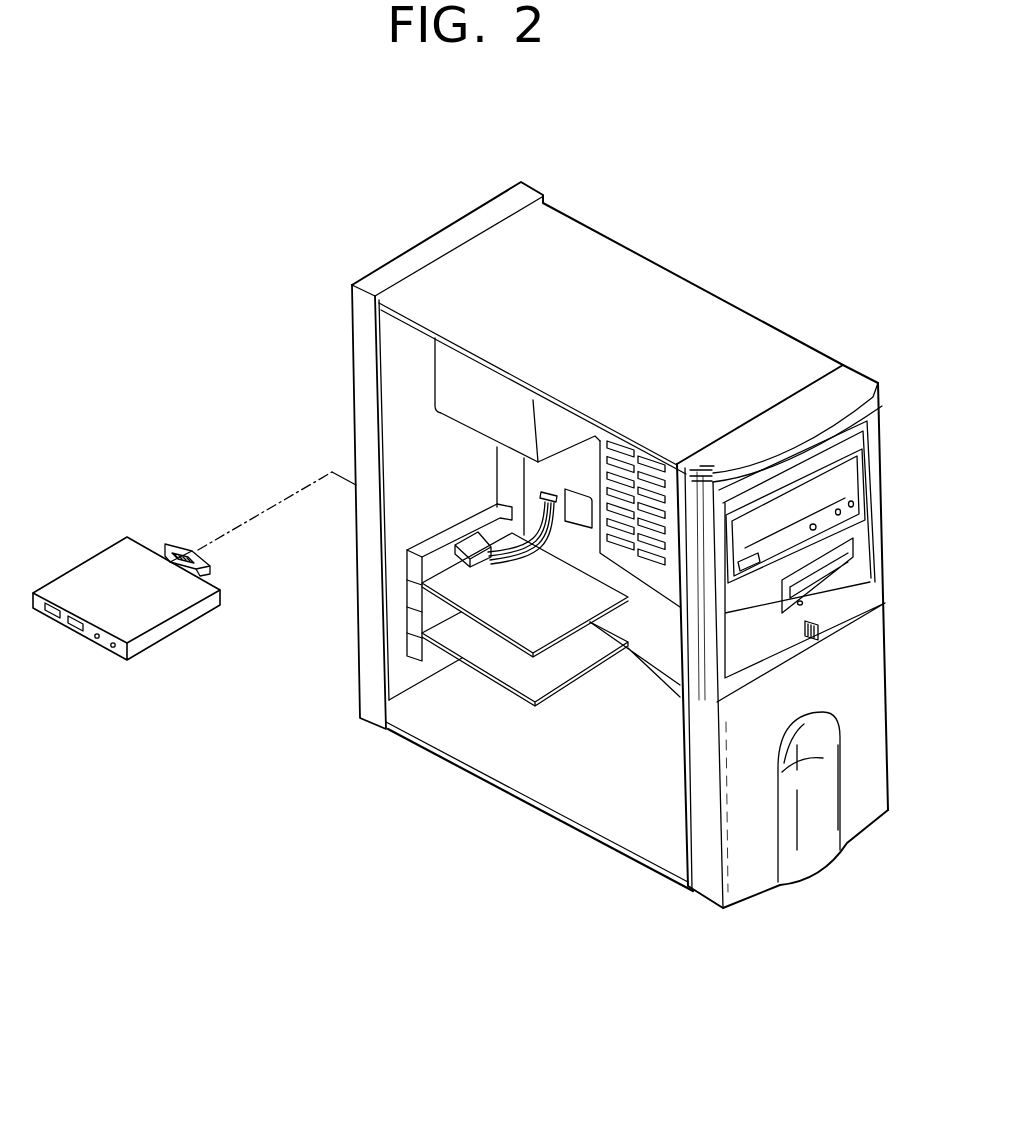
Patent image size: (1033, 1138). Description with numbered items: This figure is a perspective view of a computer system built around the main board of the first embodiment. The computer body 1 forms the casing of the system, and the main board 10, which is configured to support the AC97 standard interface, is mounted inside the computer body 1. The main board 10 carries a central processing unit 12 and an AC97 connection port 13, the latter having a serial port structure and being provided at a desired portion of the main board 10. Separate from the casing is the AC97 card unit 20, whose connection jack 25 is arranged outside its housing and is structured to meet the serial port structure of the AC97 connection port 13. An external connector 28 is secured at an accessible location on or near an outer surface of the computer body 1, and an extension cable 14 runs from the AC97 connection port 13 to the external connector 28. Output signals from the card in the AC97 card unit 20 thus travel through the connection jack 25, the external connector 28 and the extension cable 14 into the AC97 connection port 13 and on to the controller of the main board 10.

The computer body 1 is at (702, 897).
The main board 10 is at (620, 570).
The central processing unit (CPU) 12 is at (586, 500).
The AC97 connection port 13 is at (548, 492).
The extension cable 14 is at (505, 568).
The AC97 card unit 20 is at (194, 549).
The connection jack 25 is at (180, 540).
The external connector 28 is at (462, 543).